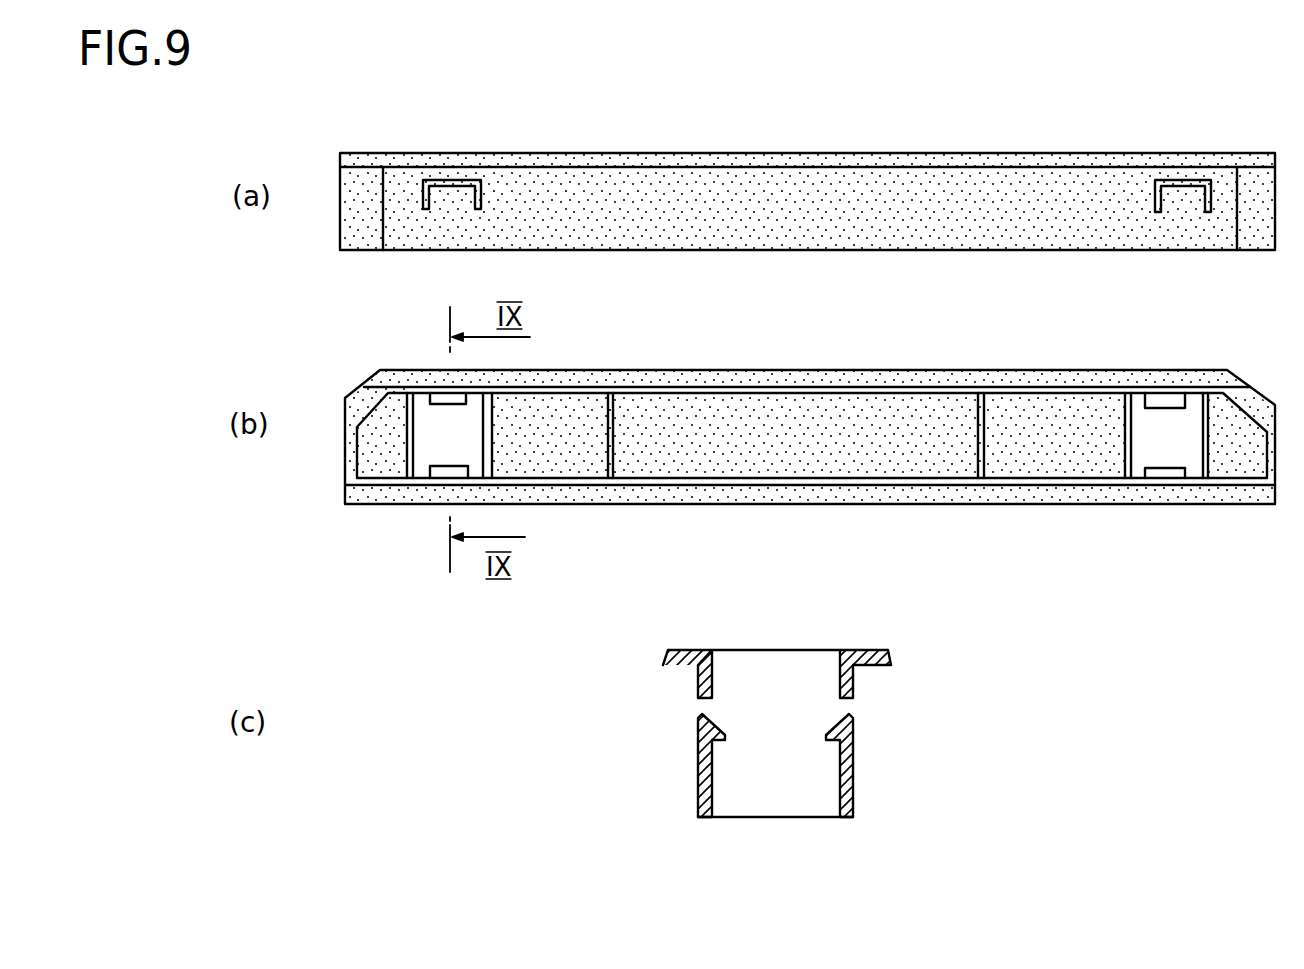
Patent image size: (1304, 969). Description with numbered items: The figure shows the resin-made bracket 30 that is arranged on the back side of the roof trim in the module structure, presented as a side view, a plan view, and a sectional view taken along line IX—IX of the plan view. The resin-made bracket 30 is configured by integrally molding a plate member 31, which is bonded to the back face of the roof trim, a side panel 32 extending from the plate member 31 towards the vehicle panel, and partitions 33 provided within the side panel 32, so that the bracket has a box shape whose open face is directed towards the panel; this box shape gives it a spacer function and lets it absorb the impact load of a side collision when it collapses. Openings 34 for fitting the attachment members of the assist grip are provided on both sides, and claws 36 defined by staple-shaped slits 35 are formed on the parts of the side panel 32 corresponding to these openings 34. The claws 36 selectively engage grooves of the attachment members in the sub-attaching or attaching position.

The resin-made bracket 30 is at (958, 143).
The plate member 31 is at (751, 153).
The side panel 32 is at (785, 212).
The partitions 33 is at (619, 431).
The openings 34 is at (418, 442).
The staple-shaped slits 35 is at (457, 180).
The claws 36 is at (447, 192).